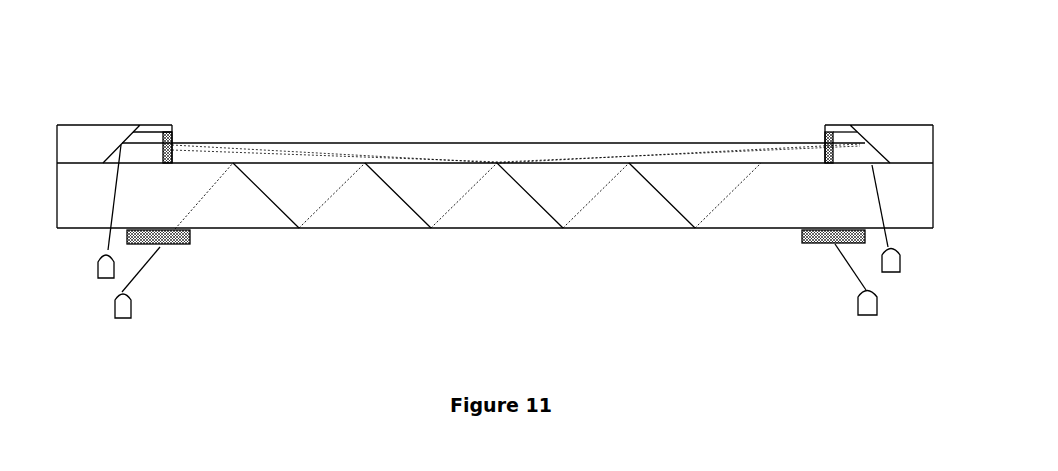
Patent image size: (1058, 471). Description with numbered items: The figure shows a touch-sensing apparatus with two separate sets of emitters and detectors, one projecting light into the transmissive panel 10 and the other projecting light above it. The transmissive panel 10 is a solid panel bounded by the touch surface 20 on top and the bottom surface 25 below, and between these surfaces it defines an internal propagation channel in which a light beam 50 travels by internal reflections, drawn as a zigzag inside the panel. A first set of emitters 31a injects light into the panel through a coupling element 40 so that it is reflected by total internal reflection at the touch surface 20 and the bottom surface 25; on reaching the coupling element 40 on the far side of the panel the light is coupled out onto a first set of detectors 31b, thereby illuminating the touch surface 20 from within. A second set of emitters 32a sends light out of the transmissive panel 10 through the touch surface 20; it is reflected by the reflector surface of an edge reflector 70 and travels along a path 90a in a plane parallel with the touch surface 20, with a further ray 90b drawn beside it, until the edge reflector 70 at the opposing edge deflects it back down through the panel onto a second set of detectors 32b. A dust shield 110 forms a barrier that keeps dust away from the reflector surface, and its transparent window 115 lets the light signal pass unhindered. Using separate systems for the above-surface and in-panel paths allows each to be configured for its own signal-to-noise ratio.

The transmissive panel 10 is at (358, 217).
The touch surface 20 is at (213, 163).
The bottom surface 25 is at (458, 229).
The first set of emitters 31a is at (131, 320).
The first set of detectors 31b is at (877, 318).
The second set of emitters 32a is at (98, 281).
The second set of detectors 32b is at (900, 275).
The coupling element 40 is at (173, 246).
The light beam 50 is at (277, 213).
The edge reflector 70 is at (112, 125).
The path 90a is at (297, 140).
The second light ray 90b is at (358, 156).
The dust shield 110 is at (170, 130).
The transparent window 115 is at (173, 150).